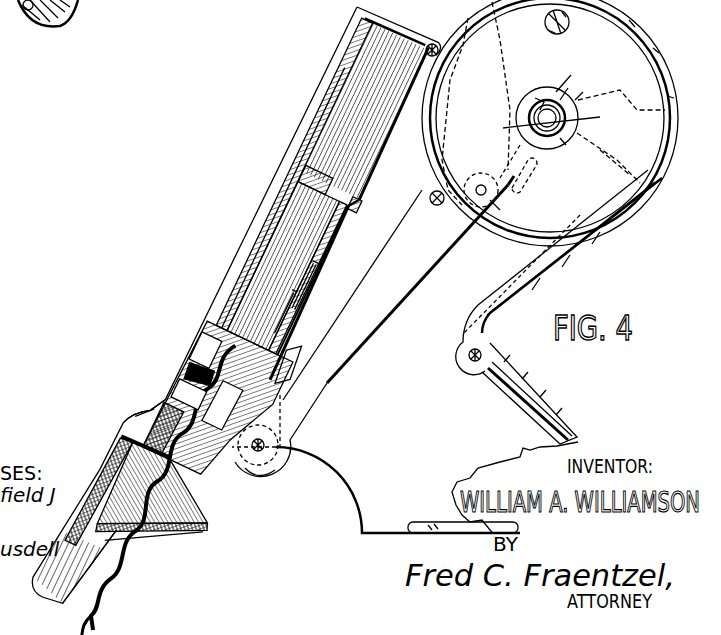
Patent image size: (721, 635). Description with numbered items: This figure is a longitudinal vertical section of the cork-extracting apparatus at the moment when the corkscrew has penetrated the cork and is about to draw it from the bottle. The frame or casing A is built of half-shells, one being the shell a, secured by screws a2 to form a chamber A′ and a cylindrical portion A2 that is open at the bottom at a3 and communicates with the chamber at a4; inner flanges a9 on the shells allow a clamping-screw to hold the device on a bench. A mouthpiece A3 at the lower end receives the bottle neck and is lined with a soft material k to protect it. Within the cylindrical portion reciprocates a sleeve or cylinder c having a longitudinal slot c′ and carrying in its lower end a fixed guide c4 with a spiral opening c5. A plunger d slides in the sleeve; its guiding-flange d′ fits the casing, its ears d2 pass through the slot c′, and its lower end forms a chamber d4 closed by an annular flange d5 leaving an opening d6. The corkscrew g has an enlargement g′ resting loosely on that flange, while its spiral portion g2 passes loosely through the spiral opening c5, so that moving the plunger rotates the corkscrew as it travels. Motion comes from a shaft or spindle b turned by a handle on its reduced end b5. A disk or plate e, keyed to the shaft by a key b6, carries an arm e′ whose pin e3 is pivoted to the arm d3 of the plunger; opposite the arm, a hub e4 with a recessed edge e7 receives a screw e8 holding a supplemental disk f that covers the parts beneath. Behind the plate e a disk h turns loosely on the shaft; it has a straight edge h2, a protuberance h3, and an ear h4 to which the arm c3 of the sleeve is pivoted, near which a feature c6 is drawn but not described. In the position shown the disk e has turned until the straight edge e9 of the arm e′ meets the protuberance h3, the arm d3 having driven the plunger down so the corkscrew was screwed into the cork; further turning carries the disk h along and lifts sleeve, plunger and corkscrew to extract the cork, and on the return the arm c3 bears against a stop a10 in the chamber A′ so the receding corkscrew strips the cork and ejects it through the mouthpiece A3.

The frame or casing A is at (235, 317).
The cylindrical portion A2 is at (347, 70).
The chamber A′ is at (559, 272).
The mouthpiece A3 is at (139, 563).
The half-shell a is at (427, 438).
The screws a2 is at (432, 43).
The bottom opening of cylindrical portion a3 is at (198, 528).
The communication opening a4 is at (307, 306).
The inner flanges a9 is at (428, 522).
The stop a10 is at (431, 197).
The shaft or spindle b is at (546, 118).
The reduced end of shaft b5 is at (584, 118).
The key b6 is at (543, 92).
The sleeve or cylinder c is at (240, 258).
The longitudinal slot c′ is at (314, 282).
The arm or lever c3 is at (270, 477).
The fixed guide c4 is at (150, 418).
The spiral opening c5 is at (190, 403).
The hook c6 is at (258, 477).
The plunger d is at (284, 281).
The guiding-flange d′ is at (325, 183).
The perforated ears or lugs d2 is at (300, 355).
The arm or lever d3 is at (395, 292).
The chamber d4 is at (205, 333).
The annular flange d5 is at (183, 362).
The opening d6 is at (170, 383).
The disk or plate e is at (583, 77).
The arm e′ is at (476, 103).
The pin or stud e3 is at (508, 202).
The hub e4 is at (566, 97).
The recessed edge e7 is at (621, 136).
The screw e8 is at (545, 22).
The straight edge e9 is at (503, 198).
The supplemental disk or plate f is at (550, 123).
The corkscrew g is at (187, 373).
The enlargement g′ is at (193, 348).
The spiral or screw portion g2 is at (128, 552).
The disk or plate h is at (536, 176).
The straight edge h2 is at (610, 160).
The protuberance h3 is at (530, 174).
The ear or lug h4 is at (499, 181).
The soft lining material k is at (118, 465).